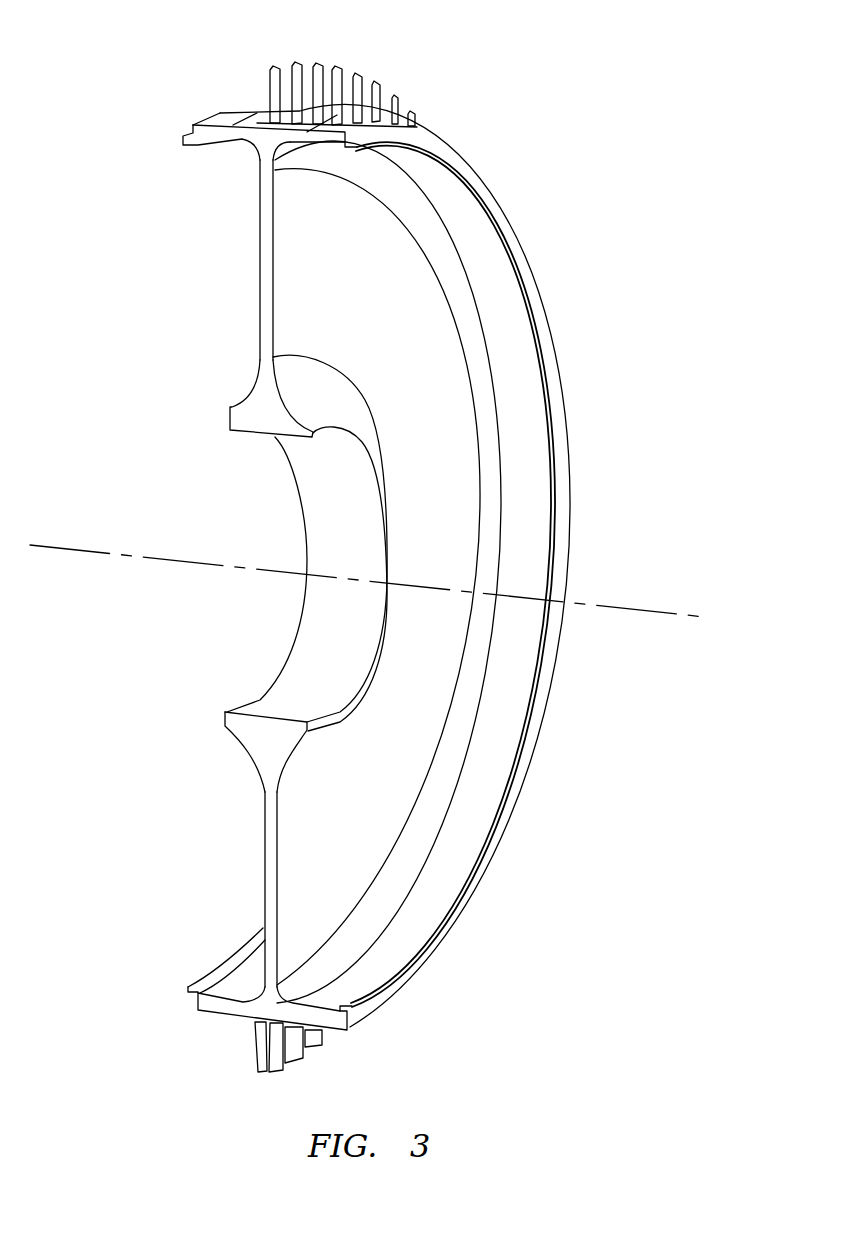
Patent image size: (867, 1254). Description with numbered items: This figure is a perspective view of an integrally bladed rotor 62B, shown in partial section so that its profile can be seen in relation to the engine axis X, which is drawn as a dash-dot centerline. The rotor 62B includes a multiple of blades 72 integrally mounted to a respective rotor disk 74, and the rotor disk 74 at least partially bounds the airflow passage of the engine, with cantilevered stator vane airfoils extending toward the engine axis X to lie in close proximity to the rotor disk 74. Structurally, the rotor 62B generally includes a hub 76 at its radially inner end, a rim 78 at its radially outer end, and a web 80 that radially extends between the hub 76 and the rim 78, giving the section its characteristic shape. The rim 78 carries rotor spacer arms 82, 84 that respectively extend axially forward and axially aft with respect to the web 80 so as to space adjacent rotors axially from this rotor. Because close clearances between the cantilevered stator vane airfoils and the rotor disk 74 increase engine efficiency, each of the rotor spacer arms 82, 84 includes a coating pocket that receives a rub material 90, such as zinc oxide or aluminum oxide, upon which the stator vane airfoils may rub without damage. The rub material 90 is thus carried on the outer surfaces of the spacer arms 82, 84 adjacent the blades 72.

The integrally bladed rotor 62B is at (460, 565).
The blades 72 is at (383, 90).
The rotor disk 74 is at (557, 342).
The hub 76 is at (233, 400).
The rim 78 is at (145, 137).
The web 80 is at (247, 287).
The rotor spacer arm 82 is at (295, 544).
The rotor spacer arm 84 is at (456, 134).
The rub material 90 is at (224, 118).
The engine axis X is at (685, 617).